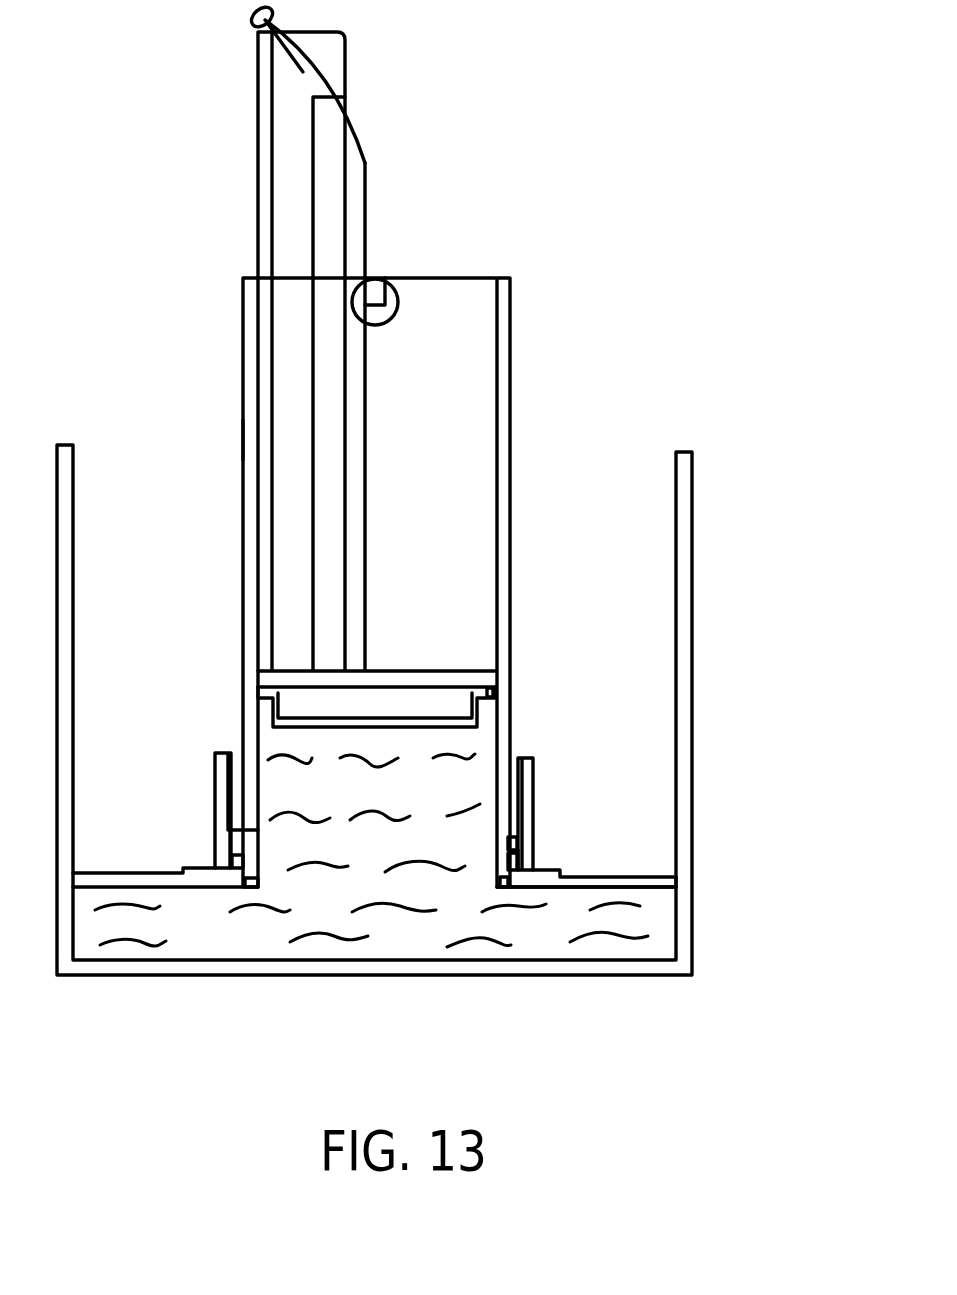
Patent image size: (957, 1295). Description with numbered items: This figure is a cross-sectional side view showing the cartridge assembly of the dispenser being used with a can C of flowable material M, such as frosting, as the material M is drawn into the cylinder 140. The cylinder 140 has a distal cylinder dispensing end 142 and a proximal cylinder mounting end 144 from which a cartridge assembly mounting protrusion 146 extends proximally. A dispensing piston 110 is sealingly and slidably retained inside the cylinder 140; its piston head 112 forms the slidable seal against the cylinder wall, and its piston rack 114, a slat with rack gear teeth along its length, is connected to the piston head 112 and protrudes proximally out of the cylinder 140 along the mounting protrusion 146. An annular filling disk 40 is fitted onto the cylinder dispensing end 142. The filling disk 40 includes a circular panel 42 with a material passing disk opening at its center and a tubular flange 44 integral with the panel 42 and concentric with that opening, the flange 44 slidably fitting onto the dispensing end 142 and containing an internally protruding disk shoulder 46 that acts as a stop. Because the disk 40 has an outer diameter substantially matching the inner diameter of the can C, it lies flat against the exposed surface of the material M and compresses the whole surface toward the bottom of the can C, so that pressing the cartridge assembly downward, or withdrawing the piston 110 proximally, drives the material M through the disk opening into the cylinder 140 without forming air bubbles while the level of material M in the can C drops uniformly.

The annular filling disk 40 is at (637, 885).
The circular panel 42 is at (127, 872).
The tubular flange 44 is at (216, 766).
The disk shoulder 46 is at (238, 862).
The dispensing piston 110 is at (380, 673).
The piston head 112 is at (430, 700).
The piston rack 114 is at (317, 153).
The cylinder 140 is at (243, 433).
The cylinder dispensing end 142 is at (228, 840).
The cylinder mounting end 144 is at (512, 302).
The cartridge assembly mounting protrusion 146 is at (287, 146).
The can C is at (693, 596).
The flowable material M is at (437, 923).